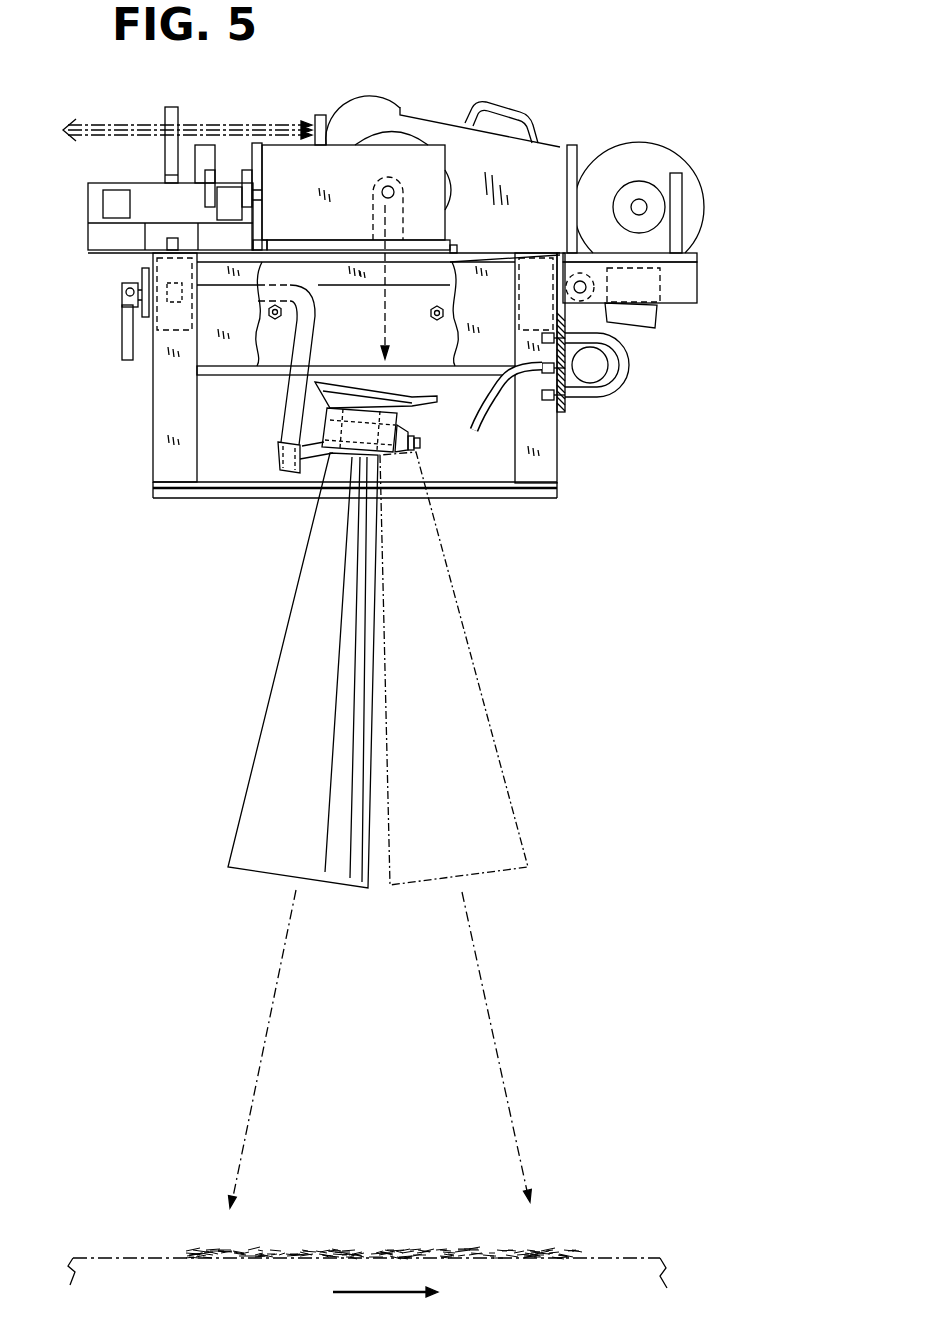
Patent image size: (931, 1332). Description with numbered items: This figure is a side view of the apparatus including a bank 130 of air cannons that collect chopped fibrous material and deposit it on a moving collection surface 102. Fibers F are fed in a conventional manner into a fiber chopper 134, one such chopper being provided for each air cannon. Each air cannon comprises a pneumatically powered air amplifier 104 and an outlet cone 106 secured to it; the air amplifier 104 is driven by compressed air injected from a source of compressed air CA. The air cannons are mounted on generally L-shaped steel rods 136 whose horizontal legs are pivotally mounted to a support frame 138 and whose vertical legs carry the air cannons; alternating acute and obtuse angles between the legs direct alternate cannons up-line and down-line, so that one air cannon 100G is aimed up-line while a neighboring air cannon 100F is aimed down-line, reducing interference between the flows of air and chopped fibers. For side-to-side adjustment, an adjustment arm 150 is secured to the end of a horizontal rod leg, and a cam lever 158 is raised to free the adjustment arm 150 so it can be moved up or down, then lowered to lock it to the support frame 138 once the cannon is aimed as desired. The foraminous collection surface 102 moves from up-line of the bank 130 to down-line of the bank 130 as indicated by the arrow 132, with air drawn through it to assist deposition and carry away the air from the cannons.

The fibers F is at (123, 120).
The fiber chopper 134 is at (424, 88).
The support frame 138 is at (170, 450).
The adjustment arm 150 is at (142, 272).
The cam lever 158 is at (121, 332).
The L-shaped rod 136 is at (295, 324).
The source of compressed air CA is at (592, 367).
The air amplifier 104 is at (336, 427).
The outlet cone 106 is at (282, 723).
The bank of air cannons 130 is at (264, 592).
The air cannon 100G is at (254, 817).
The air cannon 100F is at (509, 822).
The moving collection surface 102 is at (604, 1258).
The arrow 132 is at (366, 1291).